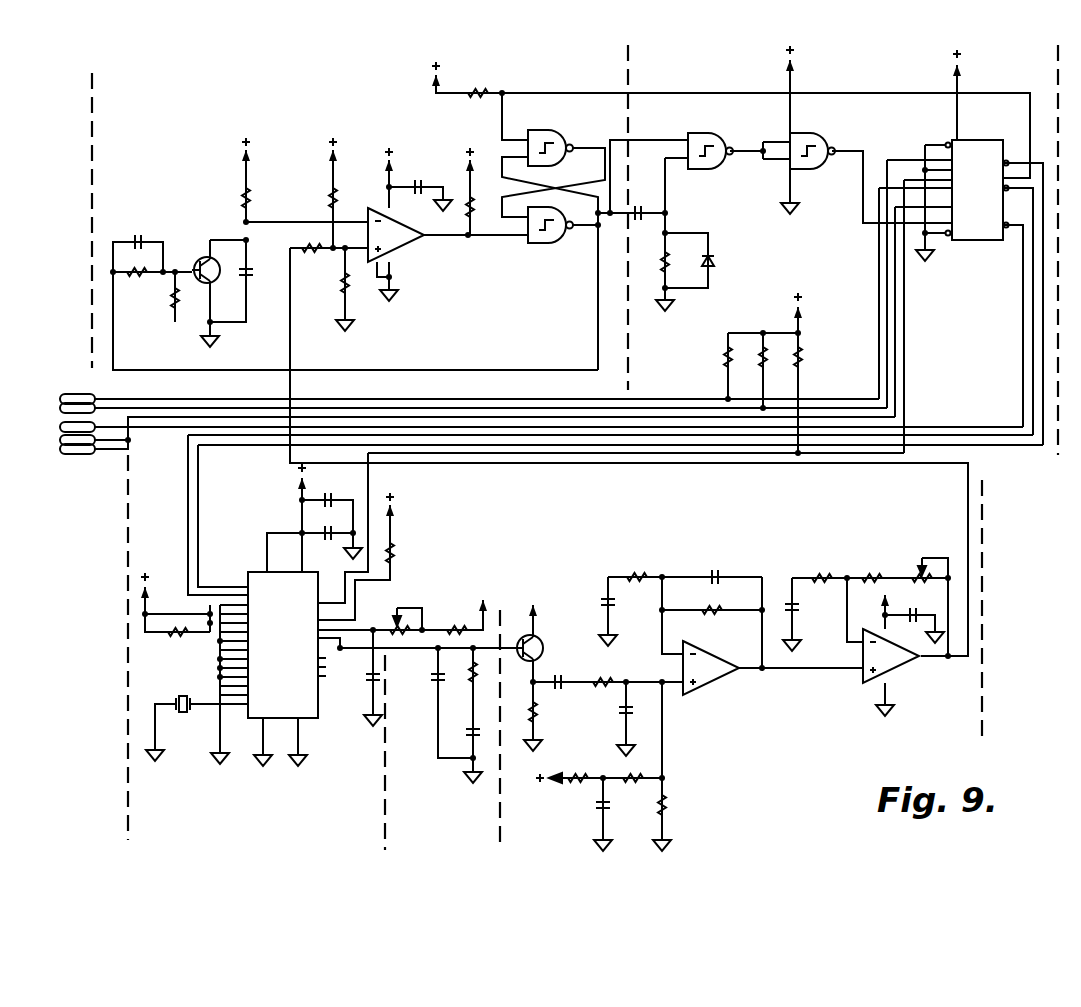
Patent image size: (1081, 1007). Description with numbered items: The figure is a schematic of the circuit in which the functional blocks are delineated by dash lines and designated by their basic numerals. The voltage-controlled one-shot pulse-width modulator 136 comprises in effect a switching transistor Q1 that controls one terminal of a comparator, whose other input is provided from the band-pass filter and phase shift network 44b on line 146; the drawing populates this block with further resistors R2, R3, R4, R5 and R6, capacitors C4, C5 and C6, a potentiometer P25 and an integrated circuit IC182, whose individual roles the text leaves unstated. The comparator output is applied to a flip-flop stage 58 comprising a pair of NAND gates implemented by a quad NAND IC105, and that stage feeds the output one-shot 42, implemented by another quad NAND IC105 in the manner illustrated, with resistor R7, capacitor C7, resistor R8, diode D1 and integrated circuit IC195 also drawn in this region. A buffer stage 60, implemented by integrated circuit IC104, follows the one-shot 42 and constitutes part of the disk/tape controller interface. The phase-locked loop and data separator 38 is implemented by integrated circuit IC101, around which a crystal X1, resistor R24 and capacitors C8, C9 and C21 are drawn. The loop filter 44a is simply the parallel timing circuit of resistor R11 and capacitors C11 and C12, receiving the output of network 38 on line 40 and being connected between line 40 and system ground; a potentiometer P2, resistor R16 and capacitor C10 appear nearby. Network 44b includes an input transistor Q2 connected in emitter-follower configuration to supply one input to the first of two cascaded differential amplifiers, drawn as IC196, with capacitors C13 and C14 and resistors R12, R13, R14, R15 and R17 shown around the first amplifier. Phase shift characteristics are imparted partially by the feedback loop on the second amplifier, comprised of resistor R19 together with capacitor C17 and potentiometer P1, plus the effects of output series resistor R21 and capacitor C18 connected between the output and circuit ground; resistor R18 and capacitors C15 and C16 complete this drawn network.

The voltage-controlled one-shot pulse-width modulator 136 is at (281, 82).
The output one-shot 42 is at (712, 82).
The buffer stage 60 is at (1012, 79).
The flip-flop stage 58 is at (549, 122).
The line 146 is at (290, 328).
The phase-locked loop and data separator 38 is at (268, 792).
The line 40 is at (426, 652).
The loop filter 44a is at (438, 790).
The band pass filter and phase shift network 44b is at (808, 747).
The resistor R2 is at (340, 282).
The resistor R3 is at (140, 278).
The resistor R4 is at (172, 296).
The resistor R5 is at (250, 203).
The resistor R6 is at (473, 206).
The resistor R7 is at (731, 120).
The resistor R8 is at (688, 256).
The resistor R11 is at (476, 676).
The resistor R12 is at (606, 678).
The resistor R13 is at (710, 615).
The resistor R14 is at (580, 775).
The resistor R15 is at (668, 806).
The resistor R16 is at (453, 628).
The resistor R17 is at (648, 773).
The resistor R18 is at (830, 562).
The resistor R19 is at (873, 573).
The output series resistor R21 is at (318, 236).
The resistor R24 is at (185, 638).
The capacitor C4 is at (148, 234).
The capacitor C5 is at (250, 274).
The capacitor C6 is at (420, 184).
The capacitor C7 is at (648, 198).
The capacitor C8 is at (332, 518).
The capacitor C9 is at (338, 486).
The capacitor C10 is at (433, 682).
The capacitor C11 is at (469, 730).
The capacitor C12 is at (620, 712).
The capacitor C13 is at (560, 676).
The capacitor C14 is at (598, 810).
The capacitor C15 is at (924, 605).
The capacitor C16 is at (798, 610).
The capacitor C17 is at (604, 600).
The capacitor C18 is at (718, 572).
The capacitor C21 is at (370, 678).
The potentiometer P1 is at (914, 568).
The potentiometer P2 is at (396, 620).
The potentiometer P25 is at (340, 203).
The switching transistor Q1 is at (197, 261).
The input transistor Q2 is at (524, 634).
The diode D1 is at (706, 268).
The crystal X1 is at (197, 719).
The integrated circuit IC101 is at (362, 628).
The integrated circuit IC104 is at (997, 125).
The quad NAND integrated circuit IC105 is at (527, 262).
The operational amplifier IC182 is at (400, 253).
The NAND gate integrated circuit IC195 is at (845, 118).
The operational amplifier IC196 is at (704, 684).